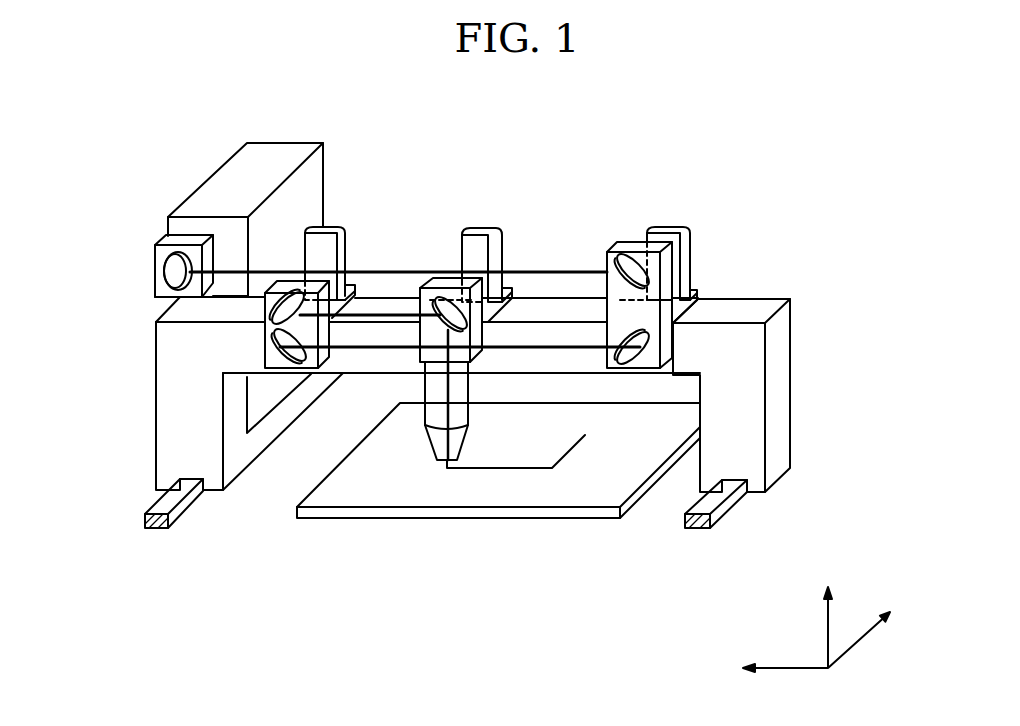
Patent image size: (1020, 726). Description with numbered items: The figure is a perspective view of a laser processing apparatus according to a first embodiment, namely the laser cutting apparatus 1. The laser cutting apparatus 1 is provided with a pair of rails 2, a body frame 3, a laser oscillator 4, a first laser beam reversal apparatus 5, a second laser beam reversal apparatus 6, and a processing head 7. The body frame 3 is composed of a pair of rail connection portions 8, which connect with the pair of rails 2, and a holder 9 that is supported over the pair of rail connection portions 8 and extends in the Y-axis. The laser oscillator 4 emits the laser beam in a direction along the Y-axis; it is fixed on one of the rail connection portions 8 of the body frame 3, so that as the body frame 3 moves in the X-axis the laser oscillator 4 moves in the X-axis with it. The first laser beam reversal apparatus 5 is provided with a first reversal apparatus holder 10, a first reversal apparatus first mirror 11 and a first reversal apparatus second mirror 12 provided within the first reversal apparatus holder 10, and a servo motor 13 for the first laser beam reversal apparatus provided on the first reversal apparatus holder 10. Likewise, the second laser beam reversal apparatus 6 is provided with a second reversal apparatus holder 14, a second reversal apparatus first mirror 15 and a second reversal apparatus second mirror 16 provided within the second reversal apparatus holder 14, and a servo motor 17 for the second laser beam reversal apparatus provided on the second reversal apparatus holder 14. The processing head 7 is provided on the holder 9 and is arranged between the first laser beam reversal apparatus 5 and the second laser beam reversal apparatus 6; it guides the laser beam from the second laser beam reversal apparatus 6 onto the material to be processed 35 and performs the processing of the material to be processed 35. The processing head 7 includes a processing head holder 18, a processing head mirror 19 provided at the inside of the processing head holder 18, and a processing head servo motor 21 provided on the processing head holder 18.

The laser cutting apparatus 1 is at (828, 195).
The rails 2 is at (170, 497).
The body frame 3 is at (806, 360).
The laser oscillator 4 is at (197, 230).
The first laser beam reversal apparatus 5 is at (682, 211).
The second laser beam reversal apparatus 6 is at (368, 210).
The processing head 7 is at (495, 210).
The rail connection portions 8 is at (173, 450).
The holder 9 is at (683, 333).
The first reversal apparatus holder 10 is at (632, 248).
The first reversal apparatus first mirror 11 is at (640, 272).
The first reversal apparatus second mirror 12 is at (638, 338).
The servo motor for the first laser beam reversal apparatus 13 is at (666, 235).
The second reversal apparatus holder 14 is at (287, 285).
The second reversal apparatus first mirror 15 is at (287, 352).
The second reversal apparatus second mirror 16 is at (263, 306).
The servo motor for the second laser beam reversal apparatus 17 is at (326, 228).
The processing head holder 18 is at (448, 293).
The processing head mirror 19 is at (478, 290).
The processing head servo motor 21 is at (484, 228).
The material to be processed 35 is at (483, 488).